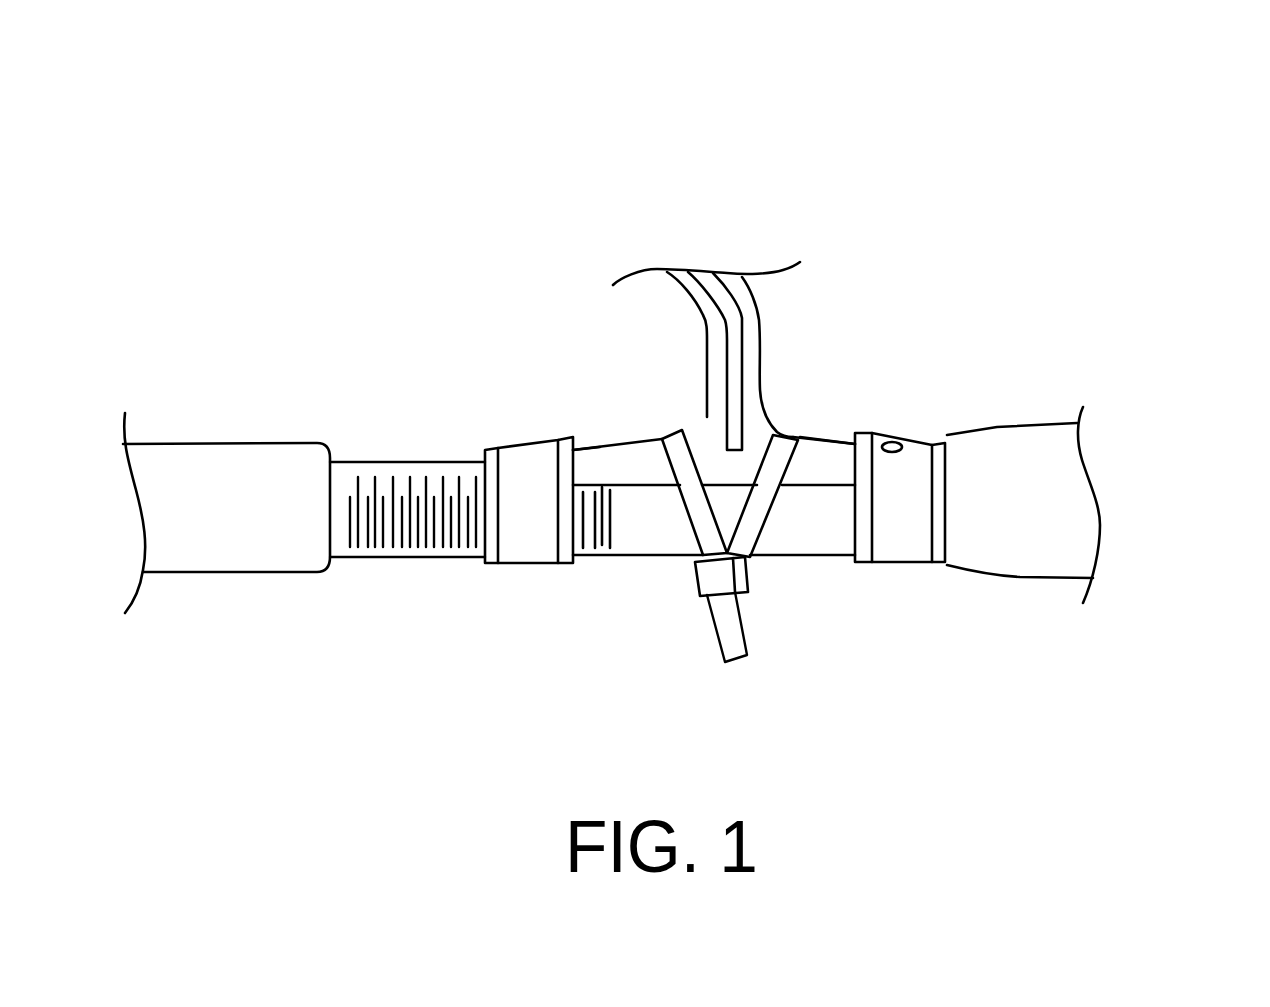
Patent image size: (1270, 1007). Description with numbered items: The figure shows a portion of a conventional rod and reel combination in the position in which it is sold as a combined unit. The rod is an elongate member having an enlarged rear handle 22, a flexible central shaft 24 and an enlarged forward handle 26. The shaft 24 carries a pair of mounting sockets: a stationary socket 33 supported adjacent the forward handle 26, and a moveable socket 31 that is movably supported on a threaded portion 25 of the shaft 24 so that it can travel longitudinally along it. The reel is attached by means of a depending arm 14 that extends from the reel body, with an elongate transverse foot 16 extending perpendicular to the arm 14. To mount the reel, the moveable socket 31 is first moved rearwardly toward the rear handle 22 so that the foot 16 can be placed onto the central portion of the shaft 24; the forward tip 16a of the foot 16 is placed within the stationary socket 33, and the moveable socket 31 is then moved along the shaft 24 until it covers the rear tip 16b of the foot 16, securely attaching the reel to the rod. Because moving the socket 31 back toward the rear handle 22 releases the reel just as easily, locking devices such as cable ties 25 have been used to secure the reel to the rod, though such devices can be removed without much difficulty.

The depending arm 14 is at (750, 318).
The foot 16 is at (717, 457).
The forward tip 16a is at (822, 467).
The rear tip 16b is at (597, 457).
The rear handle 22 is at (195, 478).
The central shaft 24 is at (815, 527).
The threaded portion 25 is at (824, 758).
The forward handle 26 is at (1033, 507).
The moveable socket 31 is at (527, 533).
The stationary socket 33 is at (910, 482).